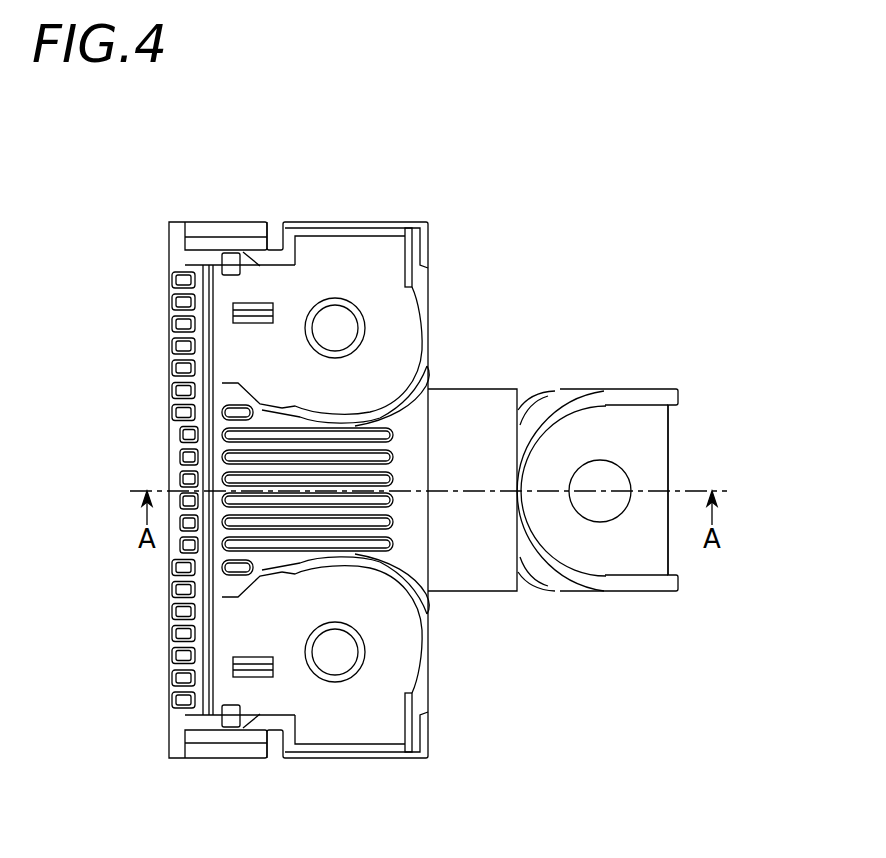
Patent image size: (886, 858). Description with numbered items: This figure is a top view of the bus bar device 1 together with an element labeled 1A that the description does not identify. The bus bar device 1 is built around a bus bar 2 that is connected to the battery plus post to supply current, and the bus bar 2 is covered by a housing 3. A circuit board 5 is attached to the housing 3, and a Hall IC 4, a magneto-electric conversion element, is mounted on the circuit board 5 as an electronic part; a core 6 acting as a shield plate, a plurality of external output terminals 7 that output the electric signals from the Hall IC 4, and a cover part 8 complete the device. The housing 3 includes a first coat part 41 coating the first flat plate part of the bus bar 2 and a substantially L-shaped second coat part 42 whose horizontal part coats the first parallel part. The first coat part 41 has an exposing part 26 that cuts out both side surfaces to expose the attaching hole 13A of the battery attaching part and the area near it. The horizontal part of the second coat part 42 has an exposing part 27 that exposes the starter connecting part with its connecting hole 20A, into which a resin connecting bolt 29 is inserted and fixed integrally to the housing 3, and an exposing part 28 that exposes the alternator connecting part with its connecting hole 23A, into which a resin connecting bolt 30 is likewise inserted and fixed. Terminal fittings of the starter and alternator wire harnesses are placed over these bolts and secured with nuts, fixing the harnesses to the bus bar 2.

The bus bar device 1 is at (612, 218).
The semiconductor element group 1A is at (518, 362).
The bus bar 2 is at (479, 284).
The housing 3 is at (479, 314).
The Hall IC 4 is at (479, 340).
The circuit board 5 is at (479, 364).
The core 6 is at (467, 414).
The external output terminals 7 is at (479, 413).
The cover part 8 is at (479, 451).
The attaching hole 13A is at (616, 472).
The connecting hole 20A is at (360, 316).
The connecting hole 23A is at (358, 662).
The exposing part 26 is at (650, 440).
The exposing part 27 is at (380, 250).
The exposing part 28 is at (380, 730).
The connecting bolt 29 is at (335, 328).
The connecting bolt 30 is at (335, 652).
The first coat part 41 is at (598, 390).
The second coat part 42 is at (317, 222).